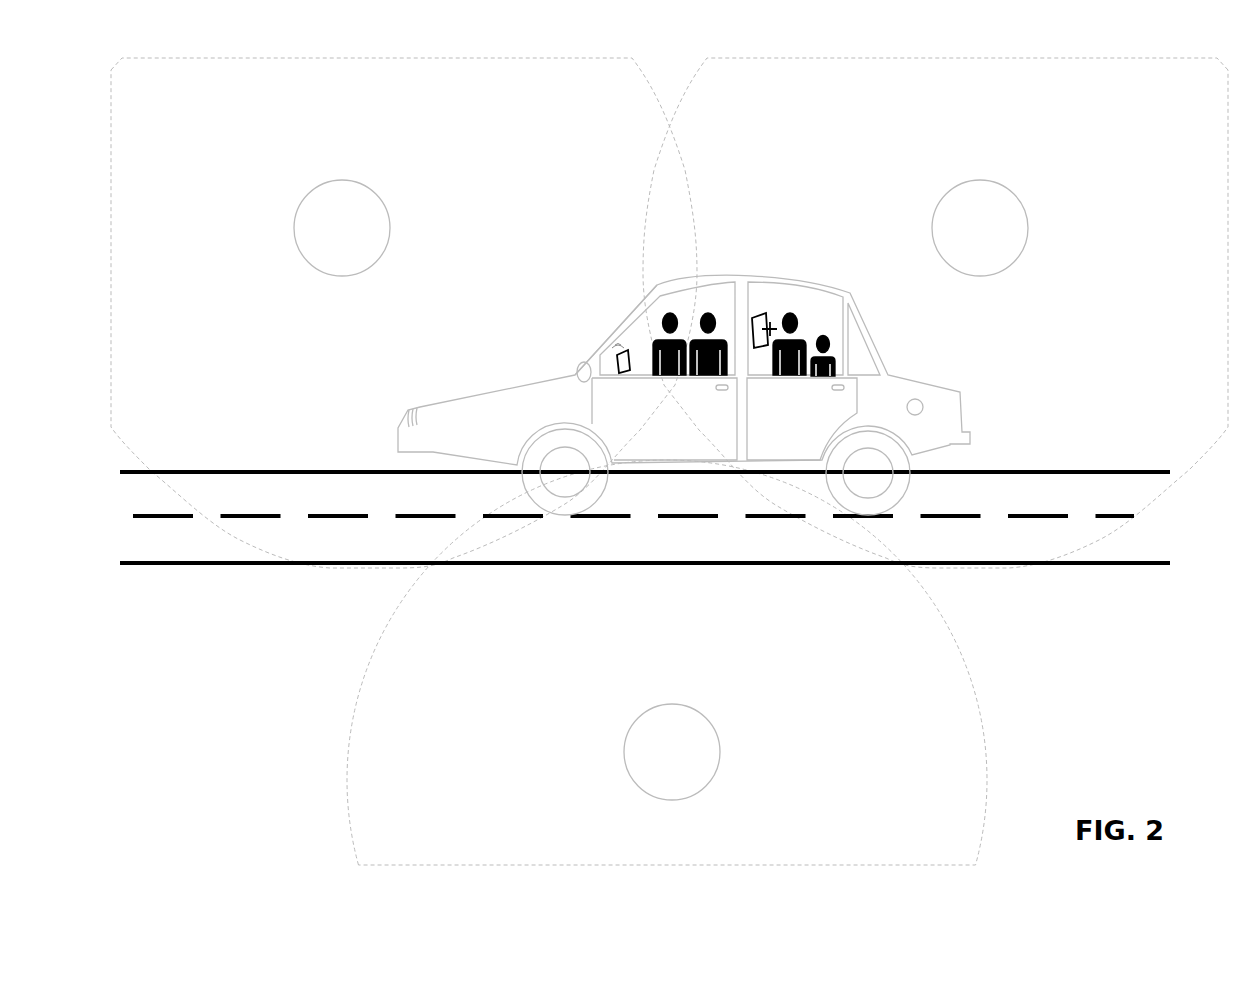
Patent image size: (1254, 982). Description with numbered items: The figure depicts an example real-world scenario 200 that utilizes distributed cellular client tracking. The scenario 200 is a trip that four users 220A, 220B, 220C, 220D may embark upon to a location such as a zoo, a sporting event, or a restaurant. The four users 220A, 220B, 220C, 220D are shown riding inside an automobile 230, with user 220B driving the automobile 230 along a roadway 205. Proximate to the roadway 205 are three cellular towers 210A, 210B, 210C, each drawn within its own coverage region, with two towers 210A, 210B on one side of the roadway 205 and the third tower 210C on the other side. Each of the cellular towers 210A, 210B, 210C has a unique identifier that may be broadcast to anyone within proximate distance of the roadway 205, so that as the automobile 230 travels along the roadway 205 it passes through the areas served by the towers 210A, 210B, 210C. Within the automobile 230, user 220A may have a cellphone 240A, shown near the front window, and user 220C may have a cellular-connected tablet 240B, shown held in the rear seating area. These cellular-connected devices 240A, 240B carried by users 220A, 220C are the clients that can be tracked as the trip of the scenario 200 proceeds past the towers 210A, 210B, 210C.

The real-world scenario 200 is at (201, 778).
The roadway 205 is at (218, 543).
The cellular tower 210A is at (404, 313).
The cellular tower 210B is at (935, 313).
The cellular tower 210C is at (667, 662).
The user 220A is at (666, 307).
The user 220B is at (712, 307).
The user 220C is at (789, 307).
The user 220D is at (826, 326).
The automobile 230 is at (684, 395).
The cellphone 240A is at (614, 360).
The cellular-connected tablet 240B is at (763, 349).